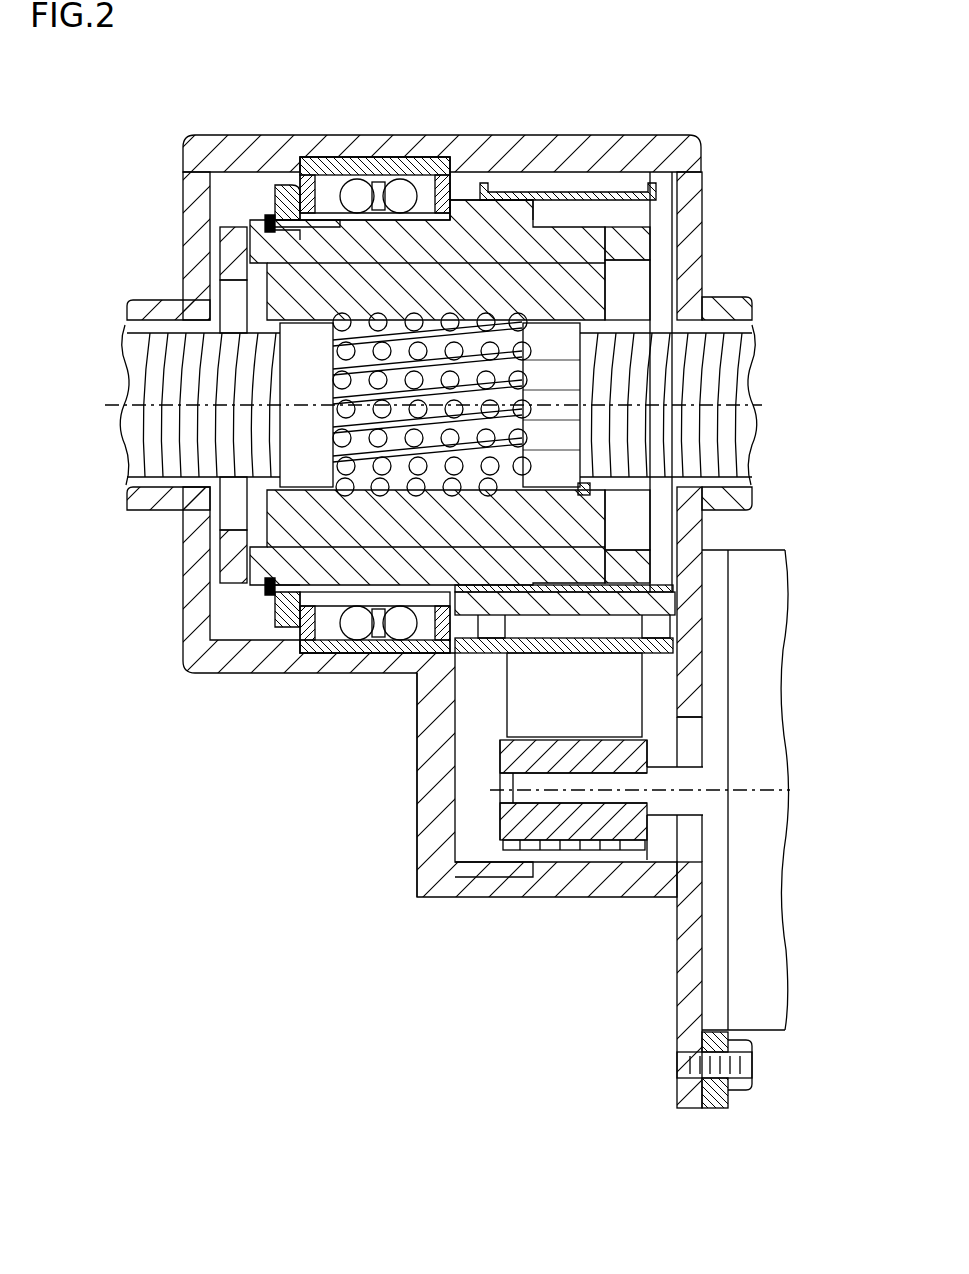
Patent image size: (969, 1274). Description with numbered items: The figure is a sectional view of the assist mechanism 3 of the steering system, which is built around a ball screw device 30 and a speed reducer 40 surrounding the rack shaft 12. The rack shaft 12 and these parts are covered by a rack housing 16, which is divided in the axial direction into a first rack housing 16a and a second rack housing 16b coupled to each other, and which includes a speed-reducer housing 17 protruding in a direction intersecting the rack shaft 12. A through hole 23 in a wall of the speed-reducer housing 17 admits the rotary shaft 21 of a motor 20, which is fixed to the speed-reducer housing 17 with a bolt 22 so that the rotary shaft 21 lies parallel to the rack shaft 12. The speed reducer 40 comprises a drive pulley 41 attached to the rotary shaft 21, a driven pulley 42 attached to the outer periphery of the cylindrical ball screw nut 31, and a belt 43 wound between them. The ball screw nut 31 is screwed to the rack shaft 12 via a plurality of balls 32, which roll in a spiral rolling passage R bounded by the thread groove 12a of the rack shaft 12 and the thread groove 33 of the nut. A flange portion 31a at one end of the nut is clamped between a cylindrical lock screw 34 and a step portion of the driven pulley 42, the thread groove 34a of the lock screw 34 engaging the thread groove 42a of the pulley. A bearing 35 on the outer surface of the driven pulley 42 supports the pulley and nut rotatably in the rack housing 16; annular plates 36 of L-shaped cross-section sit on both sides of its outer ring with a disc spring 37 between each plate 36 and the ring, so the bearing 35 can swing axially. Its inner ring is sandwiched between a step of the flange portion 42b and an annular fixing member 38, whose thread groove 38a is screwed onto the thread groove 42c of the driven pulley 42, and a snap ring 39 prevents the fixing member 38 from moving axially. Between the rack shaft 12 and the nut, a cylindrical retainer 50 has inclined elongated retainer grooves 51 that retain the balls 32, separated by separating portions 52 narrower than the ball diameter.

The assist mechanism 3 is at (377, 906).
The rack shaft 12 is at (412, 405).
The thread groove 12a is at (150, 318).
The rack housing 16 is at (403, 467).
The first rack housing 16a is at (497, 140).
The second rack housing 16b is at (608, 138).
The speed-reducer housing 17 is at (440, 855).
The motor 20 is at (772, 1052).
The rotary shaft 21 is at (690, 798).
The bolt 22 is at (735, 1092).
The through hole 23 is at (688, 735).
The ball screw device 30 is at (366, 348).
The ball screw nut 31 is at (339, 348).
The flange portion 31a is at (483, 195).
The balls 32 is at (395, 318).
The thread groove 33 is at (430, 320).
The lock screw 34 is at (640, 250).
The thread groove 34a is at (650, 200).
The bearing 35 is at (375, 407).
The plate 36 is at (305, 650).
The disc spring 37 is at (315, 650).
The fixing member 38 is at (214, 473).
The thread groove 38a is at (290, 238).
The snap ring 39 is at (275, 600).
The speed reducer 40 is at (490, 758).
The drive pulley 41 is at (505, 832).
The driven pulley 42 is at (455, 407).
The thread groove 42a is at (660, 592).
The flange portion 42b is at (655, 622).
The thread groove 42c is at (275, 200).
The belt 43 is at (625, 675).
The retainer 50 is at (592, 493).
The retainer grooves 51 is at (551, 375).
The separating portion 52 is at (551, 434).
The rolling passage R is at (360, 318).